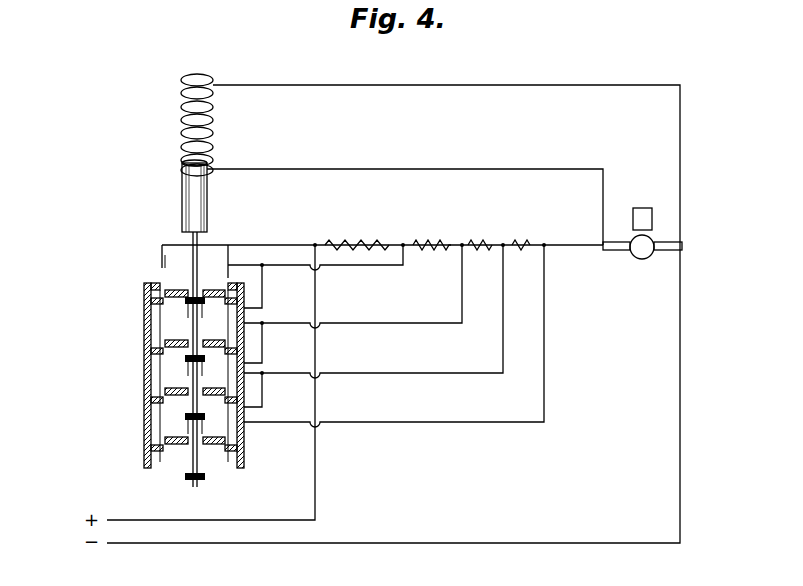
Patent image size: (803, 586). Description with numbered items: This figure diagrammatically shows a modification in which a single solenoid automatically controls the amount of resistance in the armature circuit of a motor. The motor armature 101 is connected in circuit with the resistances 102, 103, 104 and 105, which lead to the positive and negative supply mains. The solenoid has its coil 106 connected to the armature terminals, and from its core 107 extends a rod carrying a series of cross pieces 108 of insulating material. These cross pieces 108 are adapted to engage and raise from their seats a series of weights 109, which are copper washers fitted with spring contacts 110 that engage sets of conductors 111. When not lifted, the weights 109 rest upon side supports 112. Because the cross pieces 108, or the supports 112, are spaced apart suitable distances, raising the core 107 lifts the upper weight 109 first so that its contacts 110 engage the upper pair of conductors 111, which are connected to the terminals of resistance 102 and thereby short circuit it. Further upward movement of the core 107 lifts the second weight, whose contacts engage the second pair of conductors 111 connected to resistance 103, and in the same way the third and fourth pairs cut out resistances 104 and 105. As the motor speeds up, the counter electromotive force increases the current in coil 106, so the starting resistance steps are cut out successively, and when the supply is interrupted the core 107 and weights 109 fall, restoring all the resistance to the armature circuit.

The armature 101 is at (637, 259).
The resistance 102 is at (357, 234).
The resistance 103 is at (432, 234).
The resistance 104 is at (480, 234).
The resistance 105 is at (524, 234).
The coil 106 is at (213, 125).
The core 107 is at (183, 211).
The cross pieces 108 is at (210, 285).
The weights 109 is at (176, 284).
The spring contacts 110 is at (160, 289).
The conductors 111 is at (160, 262).
The side supports 112 is at (145, 328).